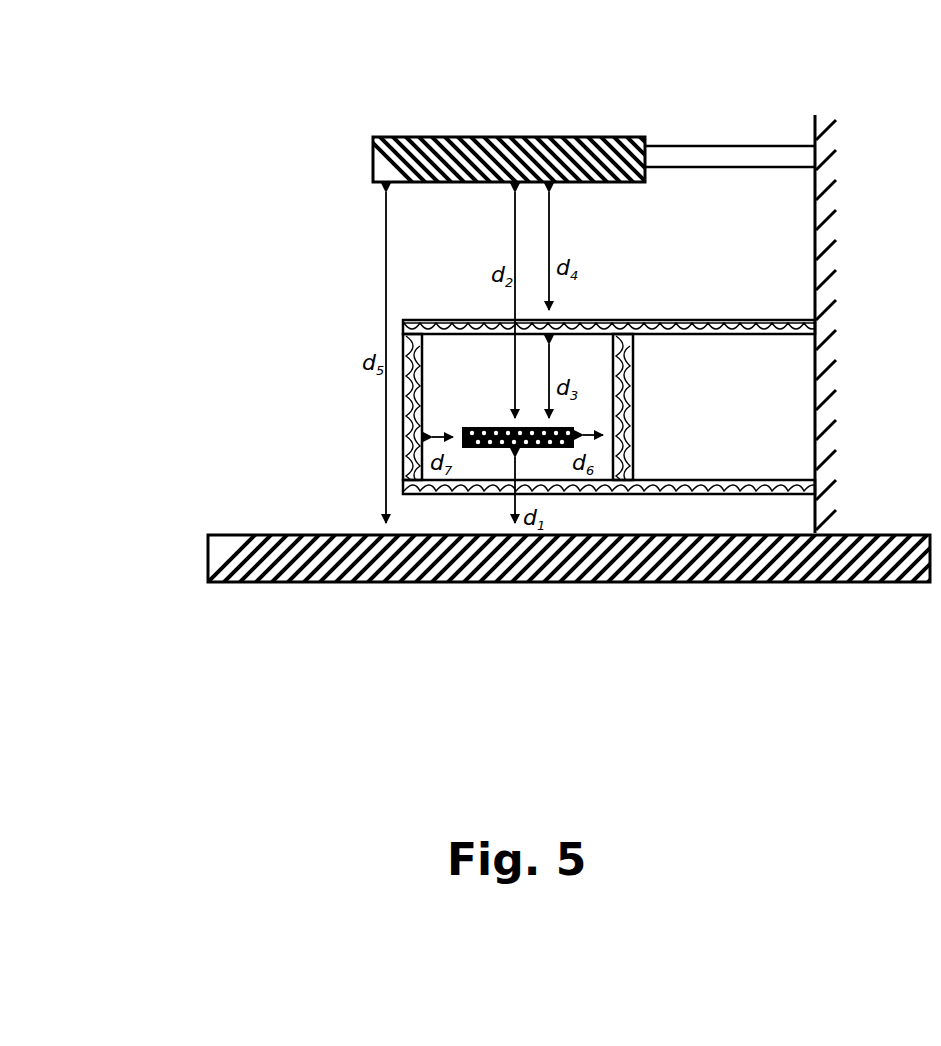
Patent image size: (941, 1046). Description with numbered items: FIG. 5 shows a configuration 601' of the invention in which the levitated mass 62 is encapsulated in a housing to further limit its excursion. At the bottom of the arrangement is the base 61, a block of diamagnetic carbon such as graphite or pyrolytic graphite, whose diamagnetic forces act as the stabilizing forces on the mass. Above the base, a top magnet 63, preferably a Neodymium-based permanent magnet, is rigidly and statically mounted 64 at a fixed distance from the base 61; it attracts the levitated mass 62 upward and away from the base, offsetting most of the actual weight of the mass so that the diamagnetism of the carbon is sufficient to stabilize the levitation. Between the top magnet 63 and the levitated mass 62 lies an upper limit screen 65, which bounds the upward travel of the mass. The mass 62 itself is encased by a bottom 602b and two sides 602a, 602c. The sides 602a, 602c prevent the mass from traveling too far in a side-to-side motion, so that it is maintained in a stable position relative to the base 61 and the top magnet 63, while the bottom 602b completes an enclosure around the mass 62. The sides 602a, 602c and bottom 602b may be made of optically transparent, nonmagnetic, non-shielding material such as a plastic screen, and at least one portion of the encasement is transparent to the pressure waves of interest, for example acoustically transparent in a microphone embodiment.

The encapsulated levitation configuration 601' is at (136, 71).
The base 61 is at (208, 556).
The levitated mass 62 is at (490, 428).
The top magnet 63 is at (373, 150).
The static mounting 64 is at (833, 140).
The upper limit screen 65 is at (710, 320).
The side 602a is at (640, 380).
The bottom 602b is at (757, 480).
The side 602c is at (402, 418).